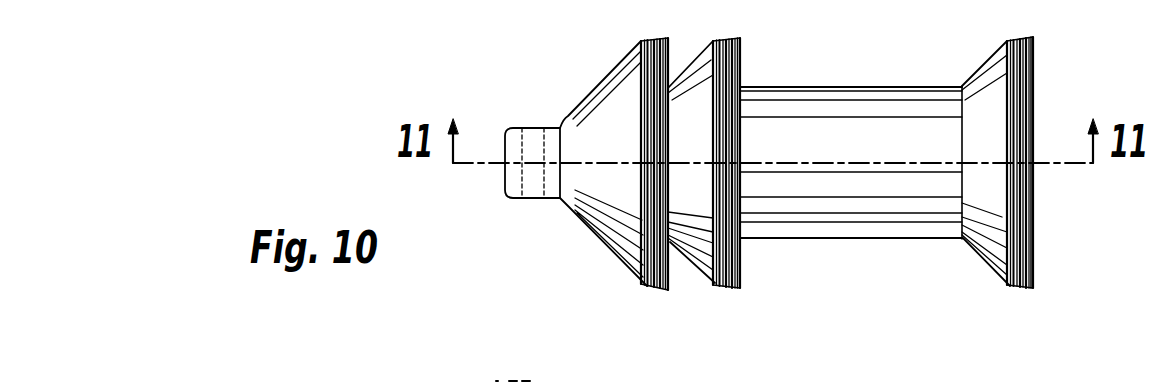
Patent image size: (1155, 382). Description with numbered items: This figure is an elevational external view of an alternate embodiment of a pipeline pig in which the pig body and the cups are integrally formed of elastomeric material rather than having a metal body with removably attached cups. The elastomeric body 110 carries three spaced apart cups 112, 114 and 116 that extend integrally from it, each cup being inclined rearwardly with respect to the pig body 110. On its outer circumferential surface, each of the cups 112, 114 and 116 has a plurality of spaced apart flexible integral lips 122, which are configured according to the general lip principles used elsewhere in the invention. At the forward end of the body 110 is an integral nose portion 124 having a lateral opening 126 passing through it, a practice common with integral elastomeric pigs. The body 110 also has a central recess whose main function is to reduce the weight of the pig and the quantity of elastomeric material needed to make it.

The elastomeric body 110 is at (865, 98).
The cup 112 is at (608, 233).
The cup 114 is at (687, 263).
The cup 116 is at (995, 258).
The flexible integral lips 122 is at (657, 290).
The integral nose portion 124 is at (515, 190).
The lateral opening 126 is at (522, 152).